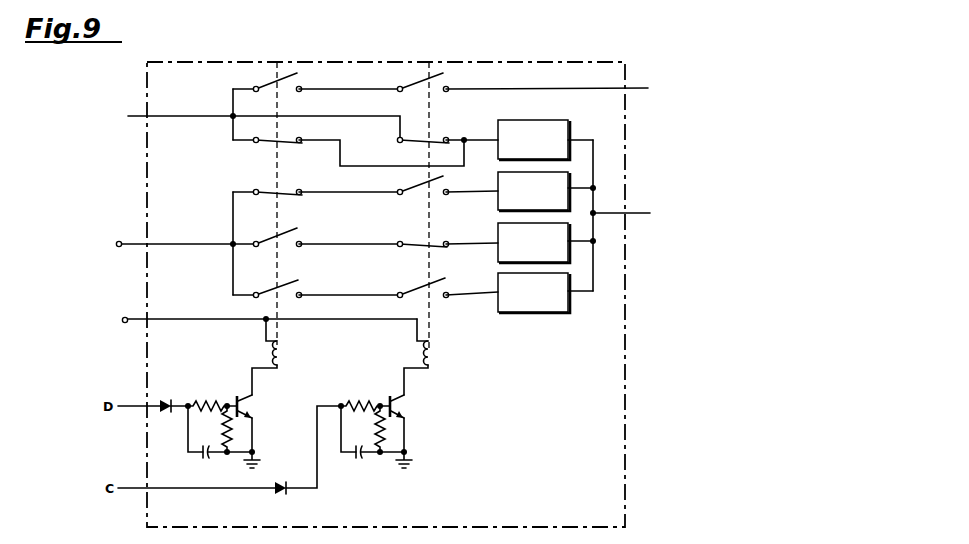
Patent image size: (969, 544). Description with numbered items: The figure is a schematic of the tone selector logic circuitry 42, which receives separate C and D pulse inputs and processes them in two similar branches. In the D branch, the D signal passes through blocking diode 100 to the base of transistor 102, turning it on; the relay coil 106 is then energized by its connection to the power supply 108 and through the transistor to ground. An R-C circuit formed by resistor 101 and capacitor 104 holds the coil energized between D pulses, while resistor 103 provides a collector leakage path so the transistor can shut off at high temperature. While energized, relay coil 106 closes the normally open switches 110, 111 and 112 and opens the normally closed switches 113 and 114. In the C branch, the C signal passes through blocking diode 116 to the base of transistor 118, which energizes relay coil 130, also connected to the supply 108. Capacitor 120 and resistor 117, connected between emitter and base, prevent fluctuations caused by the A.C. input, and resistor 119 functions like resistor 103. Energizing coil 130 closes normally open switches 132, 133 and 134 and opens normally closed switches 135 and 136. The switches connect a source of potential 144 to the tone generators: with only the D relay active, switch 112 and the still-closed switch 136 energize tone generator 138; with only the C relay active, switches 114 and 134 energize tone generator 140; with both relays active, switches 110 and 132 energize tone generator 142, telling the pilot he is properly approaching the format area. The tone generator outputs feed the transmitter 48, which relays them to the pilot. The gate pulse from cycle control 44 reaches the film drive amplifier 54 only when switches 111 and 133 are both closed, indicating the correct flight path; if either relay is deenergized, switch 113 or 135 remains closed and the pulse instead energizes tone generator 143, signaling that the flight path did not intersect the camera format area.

The tone selector logic circuitry 42 is at (600, 70).
The cycle control 44 is at (128, 94).
The transmitter 48 is at (654, 225).
The film drive amplifier 54 is at (601, 89).
The blocking diode 100 is at (165, 401).
The resistor 101 is at (206, 401).
The transistor 102 is at (244, 401).
The resistor 103 is at (233, 436).
The capacitor 104 is at (204, 461).
The relay coil 106 is at (283, 356).
The power supply 108 is at (121, 325).
The normally open switch 110 is at (268, 299).
The normally open switch 111 is at (283, 72).
The normally open switch 112 is at (293, 229).
The normally closed switch 113 is at (292, 142).
The normally closed switch 114 is at (271, 191).
The blocking diode 116 is at (277, 500).
The resistor 117 is at (356, 401).
The transistor 118 is at (397, 403).
The resistor 119 is at (386, 436).
The capacitor 120 is at (357, 463).
The relay coil 130 is at (433, 360).
The normally open switch 132 is at (416, 298).
The normally open switch 133 is at (437, 73).
The normally open switch 134 is at (413, 186).
The normally closed switch 135 is at (432, 139).
The normally closed switch 136 is at (413, 248).
The tone generator 138 is at (498, 250).
The tone generator 140 is at (498, 197).
The tone generator 142 is at (501, 300).
The tone generator 143 is at (560, 119).
The source of potential 144 is at (117, 242).